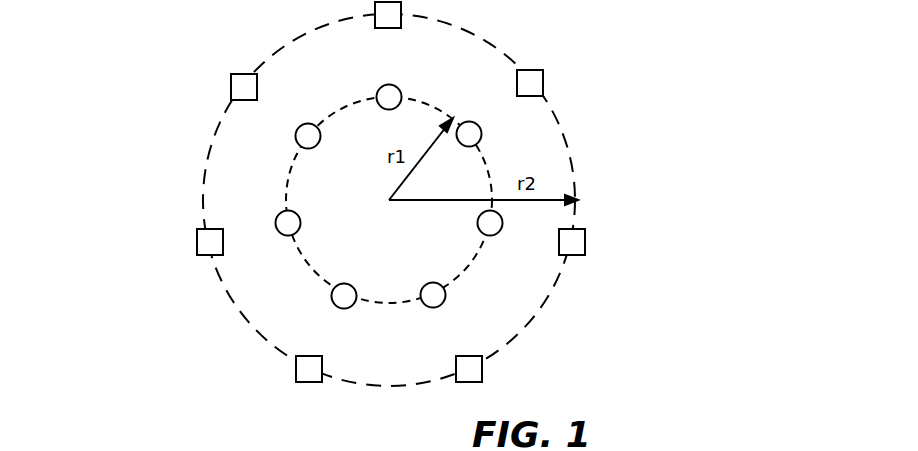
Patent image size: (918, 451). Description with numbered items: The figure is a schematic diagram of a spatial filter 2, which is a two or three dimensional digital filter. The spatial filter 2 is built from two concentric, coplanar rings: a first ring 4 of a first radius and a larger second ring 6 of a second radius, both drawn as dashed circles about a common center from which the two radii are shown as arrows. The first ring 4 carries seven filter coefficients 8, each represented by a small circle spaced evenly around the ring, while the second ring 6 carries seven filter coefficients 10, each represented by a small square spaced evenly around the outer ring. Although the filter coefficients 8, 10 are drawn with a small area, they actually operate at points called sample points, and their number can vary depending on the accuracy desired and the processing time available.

The spatial filter 2 is at (176, 54).
The first ring 4 is at (292, 166).
The second ring 6 is at (238, 300).
The filter coefficients 8 is at (308, 124).
The filter coefficients 10 is at (296, 370).